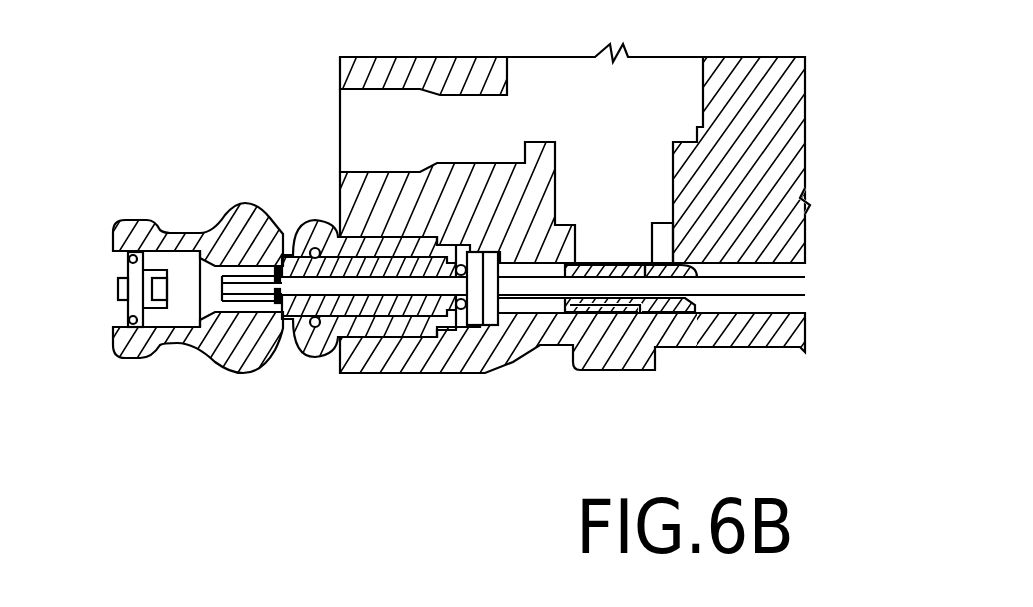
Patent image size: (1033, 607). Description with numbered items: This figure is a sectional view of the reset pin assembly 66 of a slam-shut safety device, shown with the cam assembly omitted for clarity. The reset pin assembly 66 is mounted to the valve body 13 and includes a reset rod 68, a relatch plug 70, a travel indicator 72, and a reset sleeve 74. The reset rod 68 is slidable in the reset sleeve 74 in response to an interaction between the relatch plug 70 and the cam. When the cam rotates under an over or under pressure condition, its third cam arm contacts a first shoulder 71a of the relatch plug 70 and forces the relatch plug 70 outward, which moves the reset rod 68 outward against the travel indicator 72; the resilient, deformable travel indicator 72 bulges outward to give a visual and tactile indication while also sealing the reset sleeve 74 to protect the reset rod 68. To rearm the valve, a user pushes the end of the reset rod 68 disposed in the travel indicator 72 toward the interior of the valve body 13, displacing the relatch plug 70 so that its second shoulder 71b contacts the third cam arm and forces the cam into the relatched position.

The valve body 13 is at (780, 110).
The reset pin assembly 66 is at (179, 182).
The reset rod 68 is at (735, 283).
The relatch plug 70 is at (597, 297).
The first shoulder 71a is at (642, 268).
The second shoulder 71b is at (673, 262).
The travel indicator 72 is at (130, 293).
The reset sleeve 74 is at (150, 358).